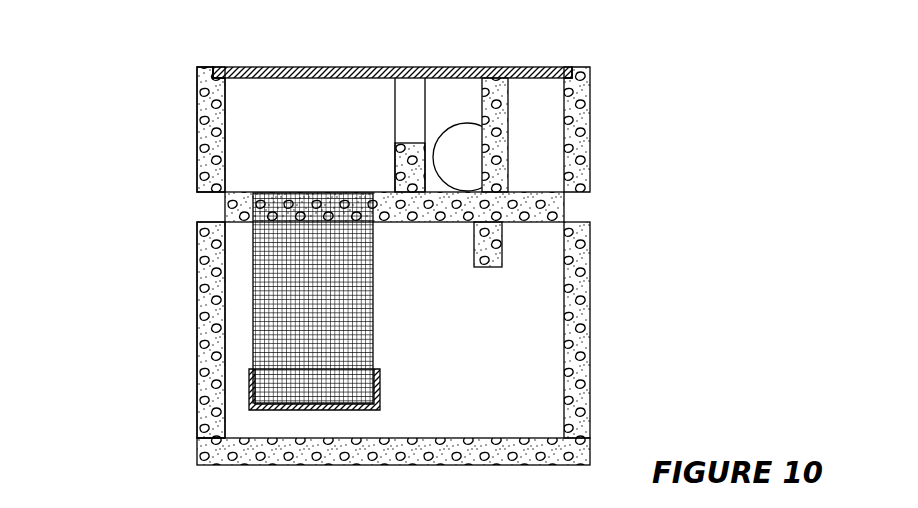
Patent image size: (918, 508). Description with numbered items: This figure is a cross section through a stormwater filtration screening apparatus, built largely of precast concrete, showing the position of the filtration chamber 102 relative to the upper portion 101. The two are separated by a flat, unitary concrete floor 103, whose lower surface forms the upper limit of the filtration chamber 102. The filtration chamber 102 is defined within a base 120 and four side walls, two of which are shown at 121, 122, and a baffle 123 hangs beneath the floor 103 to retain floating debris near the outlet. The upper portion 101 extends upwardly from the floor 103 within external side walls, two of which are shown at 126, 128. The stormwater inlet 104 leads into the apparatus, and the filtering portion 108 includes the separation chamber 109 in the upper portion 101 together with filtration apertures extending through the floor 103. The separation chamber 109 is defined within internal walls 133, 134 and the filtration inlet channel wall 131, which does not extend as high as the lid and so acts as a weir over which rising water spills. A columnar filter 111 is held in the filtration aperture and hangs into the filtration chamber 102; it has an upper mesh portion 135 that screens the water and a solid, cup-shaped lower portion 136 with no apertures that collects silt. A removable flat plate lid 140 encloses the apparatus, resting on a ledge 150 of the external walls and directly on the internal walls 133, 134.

The upper portion 101 is at (187, 112).
The filtration chamber 102 is at (187, 352).
The floor 103 is at (203, 217).
The stormwater inlet 104 is at (460, 160).
The filtering portion 108 is at (275, 167).
The separation chamber 109 is at (331, 150).
The filter 111 is at (380, 333).
The base 120 is at (390, 455).
The side wall 121 is at (590, 362).
The side wall 122 is at (203, 400).
The baffle 123 is at (503, 252).
The external side wall 126 is at (207, 156).
The external side wall 128 is at (590, 155).
The filtration inlet channel wall 131 is at (395, 168).
The internal wall 133 is at (510, 115).
The internal wall 134 is at (395, 120).
The upper mesh portion 135 is at (373, 306).
The solid lower portion 136 is at (383, 392).
The lid 140 is at (315, 66).
The ledge 150 is at (213, 70).